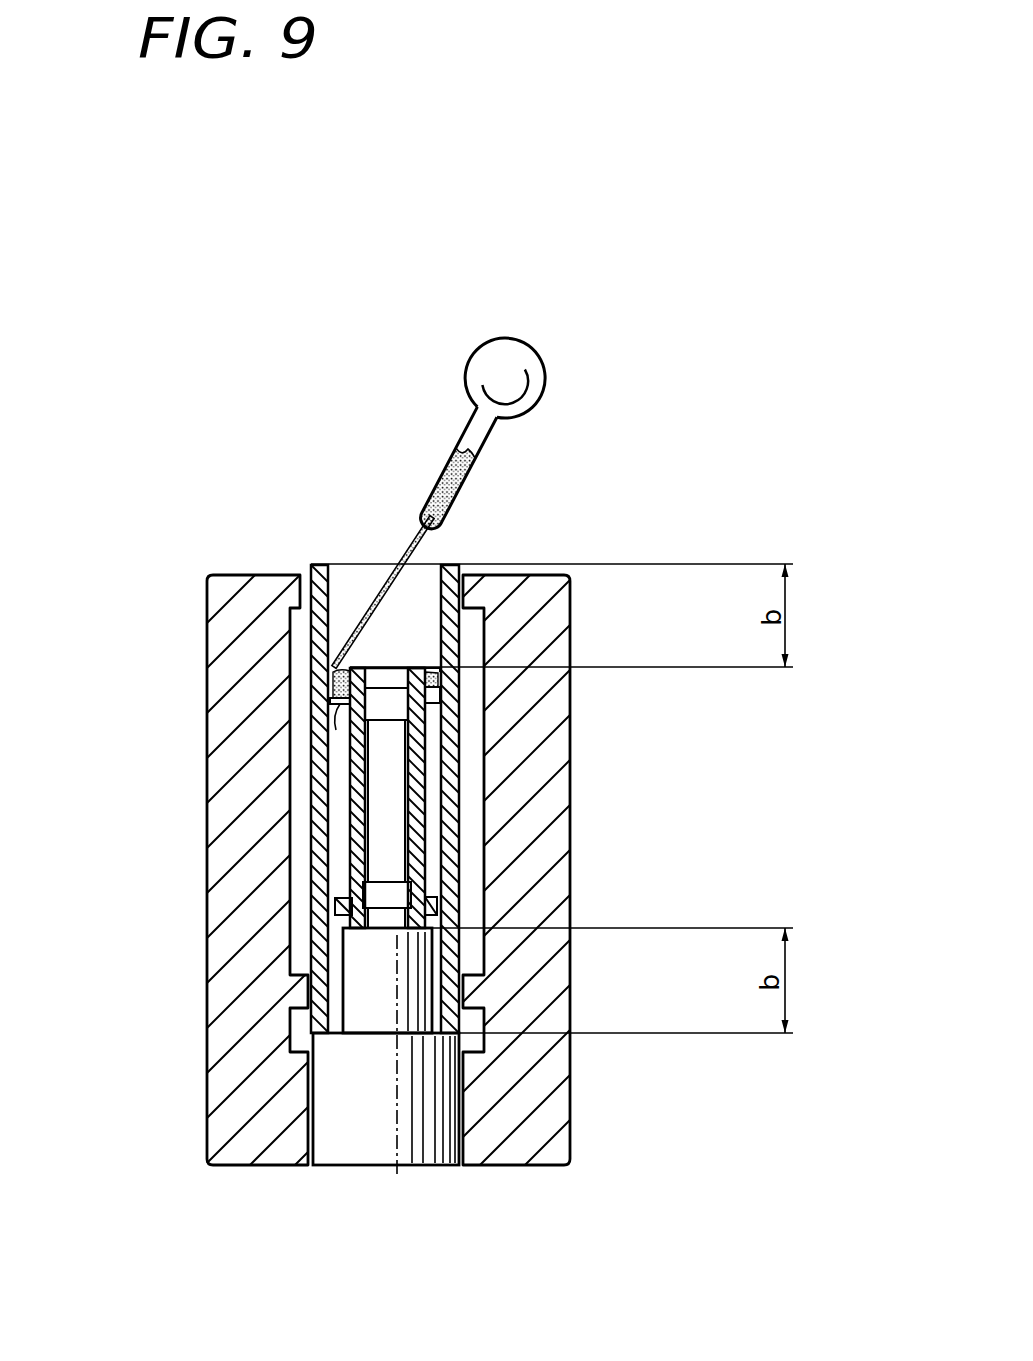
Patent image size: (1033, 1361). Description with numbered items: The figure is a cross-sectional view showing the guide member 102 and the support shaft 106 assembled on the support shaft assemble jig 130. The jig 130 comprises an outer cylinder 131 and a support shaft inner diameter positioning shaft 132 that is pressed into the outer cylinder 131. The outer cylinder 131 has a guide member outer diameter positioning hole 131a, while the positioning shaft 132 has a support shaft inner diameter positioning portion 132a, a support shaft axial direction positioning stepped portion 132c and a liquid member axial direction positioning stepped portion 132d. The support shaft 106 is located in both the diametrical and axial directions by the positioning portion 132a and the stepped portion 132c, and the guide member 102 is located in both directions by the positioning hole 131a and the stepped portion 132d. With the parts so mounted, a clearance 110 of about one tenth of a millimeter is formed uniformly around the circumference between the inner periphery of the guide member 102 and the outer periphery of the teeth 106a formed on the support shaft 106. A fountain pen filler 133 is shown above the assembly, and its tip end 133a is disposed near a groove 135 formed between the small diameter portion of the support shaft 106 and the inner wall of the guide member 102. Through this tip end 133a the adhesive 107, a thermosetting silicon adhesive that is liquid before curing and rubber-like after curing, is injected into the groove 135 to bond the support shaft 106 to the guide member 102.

The support shaft assemble jig 130 is at (440, 279).
The fountain pen filler 133 is at (515, 338).
The tip end of the fountain pen filler 133a is at (357, 625).
The adhesive 107 is at (433, 486).
The guide member 102 is at (455, 563).
The outer cylinder 131 is at (547, 574).
The guide member outer diameter positioning hole 131a is at (320, 567).
The groove 135 is at (437, 662).
The support shaft inner diameter positioning portion 132a is at (423, 709).
The clearance 110 is at (330, 695).
The teeth 106a is at (338, 712).
The support shaft 106 is at (425, 828).
The support shaft axial direction positioning stepped portion 132c is at (345, 902).
The liquid member axial direction positioning stepped portion 132d is at (443, 1030).
The support shaft inner diameter positioning shaft 132 is at (408, 1166).